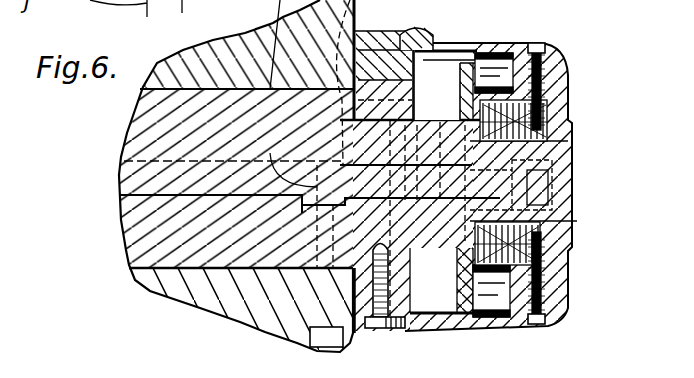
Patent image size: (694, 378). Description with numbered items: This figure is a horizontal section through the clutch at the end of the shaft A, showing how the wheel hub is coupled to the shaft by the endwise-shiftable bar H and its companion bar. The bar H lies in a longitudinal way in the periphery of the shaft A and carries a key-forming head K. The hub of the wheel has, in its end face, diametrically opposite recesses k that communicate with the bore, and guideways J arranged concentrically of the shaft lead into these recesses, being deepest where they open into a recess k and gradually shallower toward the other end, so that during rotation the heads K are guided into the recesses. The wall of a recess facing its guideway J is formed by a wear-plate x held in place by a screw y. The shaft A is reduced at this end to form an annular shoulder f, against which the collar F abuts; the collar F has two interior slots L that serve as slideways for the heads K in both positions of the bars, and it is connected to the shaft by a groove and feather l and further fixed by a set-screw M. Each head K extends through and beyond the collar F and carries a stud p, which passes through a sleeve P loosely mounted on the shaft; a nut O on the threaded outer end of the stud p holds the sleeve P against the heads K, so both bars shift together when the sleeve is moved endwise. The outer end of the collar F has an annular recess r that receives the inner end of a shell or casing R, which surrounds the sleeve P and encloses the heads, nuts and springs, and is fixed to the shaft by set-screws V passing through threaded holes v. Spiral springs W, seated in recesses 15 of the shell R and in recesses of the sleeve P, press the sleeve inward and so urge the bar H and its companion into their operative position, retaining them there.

The endwise-shiftable bar H is at (119, 182).
The shaft A is at (121, 222).
The key-forming head K is at (433, 183).
The slot L is at (186, 23).
The recess k is at (343, 376).
The wear-plate x is at (184, 124).
The guideway J is at (347, 297).
The screw y is at (340, 330).
The collar F is at (364, 322).
The set-screw M is at (395, 332).
The annular shoulder f is at (350, 270).
The sleeve P is at (486, 90).
The annular recess r is at (428, 27).
The groove and feather l is at (418, 117).
The set-screw V is at (540, 43).
The shell or casing R is at (563, 53).
The screw-threaded hole v is at (543, 72).
The recess 15 is at (560, 97).
The spiral spring W is at (520, 143).
The nut O is at (567, 221).
The stud p is at (607, 8).